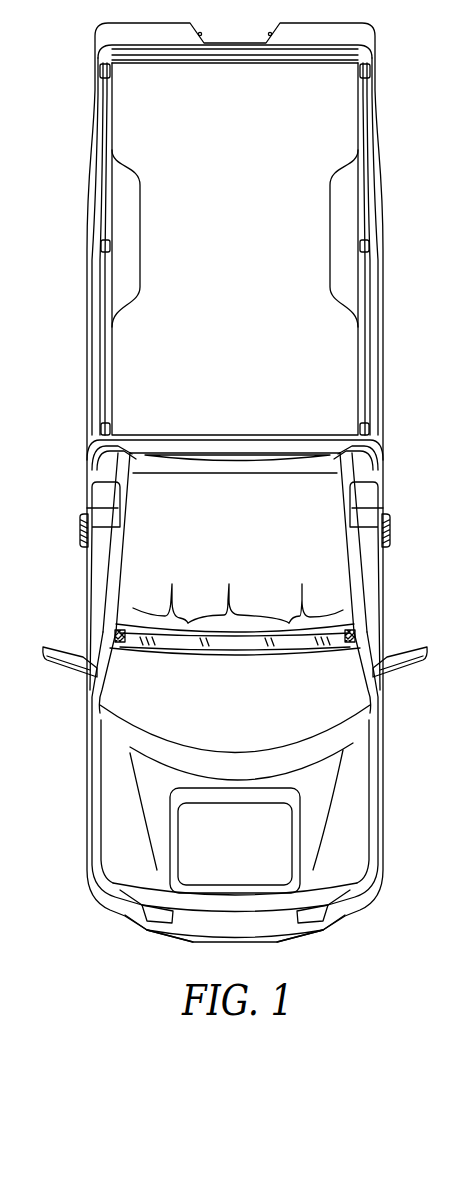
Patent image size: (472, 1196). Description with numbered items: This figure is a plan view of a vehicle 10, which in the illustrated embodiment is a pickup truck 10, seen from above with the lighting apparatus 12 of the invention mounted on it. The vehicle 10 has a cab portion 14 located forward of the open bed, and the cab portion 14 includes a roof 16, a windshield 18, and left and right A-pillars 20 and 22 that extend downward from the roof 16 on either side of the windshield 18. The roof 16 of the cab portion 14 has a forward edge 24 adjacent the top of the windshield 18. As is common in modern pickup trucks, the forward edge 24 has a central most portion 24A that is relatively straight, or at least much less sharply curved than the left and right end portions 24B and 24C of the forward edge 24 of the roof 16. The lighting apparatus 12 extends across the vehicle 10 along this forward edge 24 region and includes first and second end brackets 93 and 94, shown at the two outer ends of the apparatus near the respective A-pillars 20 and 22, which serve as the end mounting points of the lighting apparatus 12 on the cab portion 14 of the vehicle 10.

The vehicle 10 is at (411, 871).
The lighting apparatus 12 is at (297, 650).
The cab portion 14 is at (391, 551).
The roof 16 is at (243, 534).
The windshield 18 is at (241, 719).
The left A-pillar 20 is at (378, 688).
The right A-pillar 22 is at (97, 687).
The forward edge 24 is at (260, 636).
The central most portion 24A is at (238, 586).
The left end portion 24B is at (313, 586).
The right end portion 24C is at (161, 586).
The first end bracket 93 is at (355, 635).
The second end bracket 94 is at (118, 634).